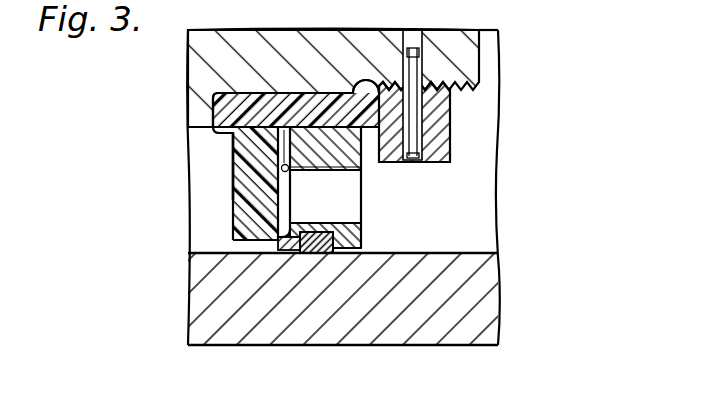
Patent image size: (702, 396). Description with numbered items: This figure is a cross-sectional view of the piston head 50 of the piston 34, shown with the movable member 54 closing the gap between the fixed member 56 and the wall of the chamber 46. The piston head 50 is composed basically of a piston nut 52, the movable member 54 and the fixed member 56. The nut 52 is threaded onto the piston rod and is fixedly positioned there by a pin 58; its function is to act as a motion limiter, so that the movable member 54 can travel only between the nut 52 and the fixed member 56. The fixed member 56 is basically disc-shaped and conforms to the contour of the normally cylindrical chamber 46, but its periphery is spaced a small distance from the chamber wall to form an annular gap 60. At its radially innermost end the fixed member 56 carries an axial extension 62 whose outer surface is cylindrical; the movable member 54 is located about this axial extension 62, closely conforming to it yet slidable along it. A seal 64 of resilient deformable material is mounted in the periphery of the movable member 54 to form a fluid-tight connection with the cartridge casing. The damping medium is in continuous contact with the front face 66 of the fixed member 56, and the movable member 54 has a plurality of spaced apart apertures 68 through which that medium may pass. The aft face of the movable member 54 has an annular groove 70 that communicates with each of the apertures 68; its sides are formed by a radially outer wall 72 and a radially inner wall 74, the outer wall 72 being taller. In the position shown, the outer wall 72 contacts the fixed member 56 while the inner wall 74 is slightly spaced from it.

The piston 34 is at (196, 78).
The chamber 46 is at (473, 254).
The piston head 50 is at (480, 112).
The piston nut 52 is at (442, 163).
The movable member 54 is at (358, 162).
The fixed member 56 is at (243, 212).
The pin 58 is at (413, 57).
The annular gap 60 is at (237, 251).
The axial extension 62 is at (308, 93).
The seal 64 is at (300, 255).
The front face 66 is at (238, 180).
The apertures 68 is at (350, 217).
The annular groove 70 is at (290, 177).
The radially outer wall 72 is at (277, 246).
The radially inner wall 74 is at (233, 145).